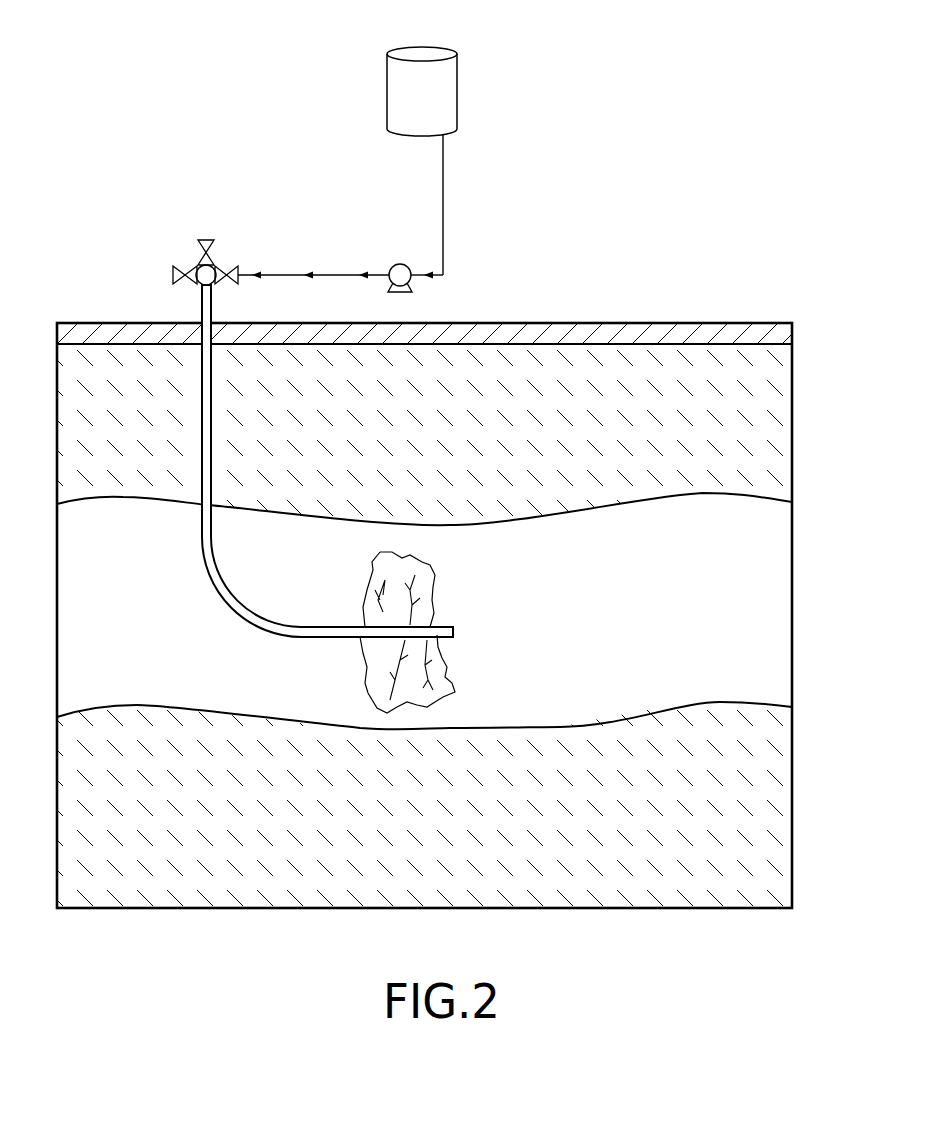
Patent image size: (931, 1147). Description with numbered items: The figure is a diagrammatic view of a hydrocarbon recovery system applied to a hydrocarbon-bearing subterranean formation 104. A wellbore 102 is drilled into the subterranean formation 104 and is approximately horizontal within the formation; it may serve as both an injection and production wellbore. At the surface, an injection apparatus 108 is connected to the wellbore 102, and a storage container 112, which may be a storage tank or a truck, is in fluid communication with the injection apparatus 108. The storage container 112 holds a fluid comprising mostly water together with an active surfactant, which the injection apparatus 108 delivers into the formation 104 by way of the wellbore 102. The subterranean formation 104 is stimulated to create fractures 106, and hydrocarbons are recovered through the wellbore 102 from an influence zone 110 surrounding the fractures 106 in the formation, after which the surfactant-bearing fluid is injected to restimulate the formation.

The wellbore 102 is at (192, 261).
The subterranean formation 104 is at (757, 613).
The fractures 106 is at (413, 598).
The injection apparatus 108 is at (392, 270).
The influence zone 110 is at (427, 570).
The storage container 112 is at (388, 83).